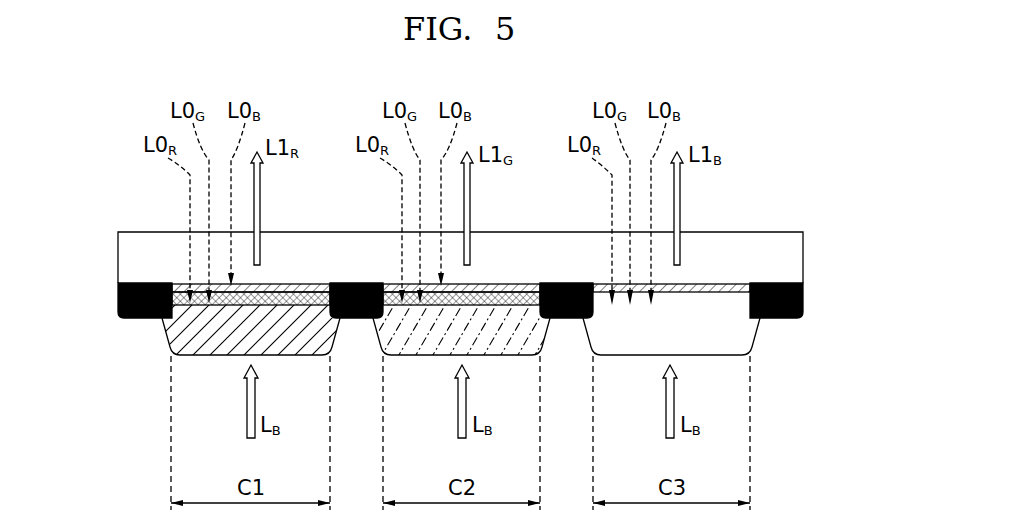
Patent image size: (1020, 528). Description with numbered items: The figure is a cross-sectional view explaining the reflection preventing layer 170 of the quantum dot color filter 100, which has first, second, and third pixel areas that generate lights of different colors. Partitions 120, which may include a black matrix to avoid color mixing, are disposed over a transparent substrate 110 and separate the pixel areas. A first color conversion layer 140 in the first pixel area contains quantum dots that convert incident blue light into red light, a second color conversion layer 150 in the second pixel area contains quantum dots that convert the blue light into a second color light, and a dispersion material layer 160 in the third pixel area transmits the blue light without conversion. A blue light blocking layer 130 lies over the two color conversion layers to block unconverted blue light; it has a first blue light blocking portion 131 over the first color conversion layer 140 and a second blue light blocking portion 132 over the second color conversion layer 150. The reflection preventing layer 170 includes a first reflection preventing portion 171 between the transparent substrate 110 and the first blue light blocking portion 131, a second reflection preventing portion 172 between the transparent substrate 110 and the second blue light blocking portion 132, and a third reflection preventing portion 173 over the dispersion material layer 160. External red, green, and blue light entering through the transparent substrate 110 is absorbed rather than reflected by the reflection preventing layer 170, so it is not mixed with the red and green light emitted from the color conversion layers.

The quantum dot color filter 100 is at (117, 166).
The transparent substrate 110 is at (803, 259).
The partitions 120 is at (803, 300).
The blue light blocking layer 130 is at (332, 246).
The first blue light blocking portion 131 is at (293, 295).
The second blue light blocking portion 132 is at (503, 295).
The first color conversion layer 140 is at (217, 343).
The second color conversion layer 150 is at (427, 343).
The dispersion material layer 160 is at (637, 343).
The reflection preventing layer 170 is at (495, 238).
The first reflection preventing portion 171 is at (325, 284).
The second reflection preventing portion 172 is at (535, 284).
The third reflection preventing portion 173 is at (717, 284).